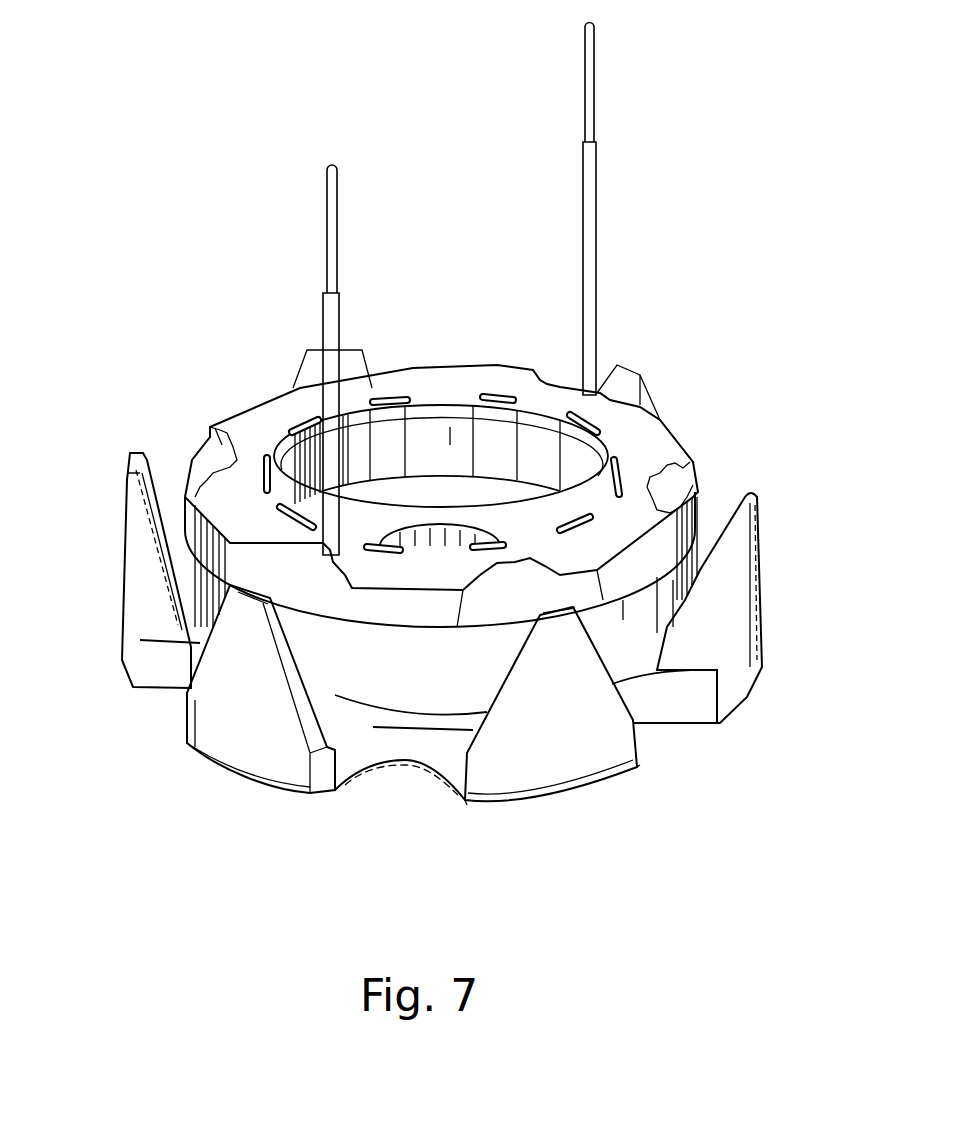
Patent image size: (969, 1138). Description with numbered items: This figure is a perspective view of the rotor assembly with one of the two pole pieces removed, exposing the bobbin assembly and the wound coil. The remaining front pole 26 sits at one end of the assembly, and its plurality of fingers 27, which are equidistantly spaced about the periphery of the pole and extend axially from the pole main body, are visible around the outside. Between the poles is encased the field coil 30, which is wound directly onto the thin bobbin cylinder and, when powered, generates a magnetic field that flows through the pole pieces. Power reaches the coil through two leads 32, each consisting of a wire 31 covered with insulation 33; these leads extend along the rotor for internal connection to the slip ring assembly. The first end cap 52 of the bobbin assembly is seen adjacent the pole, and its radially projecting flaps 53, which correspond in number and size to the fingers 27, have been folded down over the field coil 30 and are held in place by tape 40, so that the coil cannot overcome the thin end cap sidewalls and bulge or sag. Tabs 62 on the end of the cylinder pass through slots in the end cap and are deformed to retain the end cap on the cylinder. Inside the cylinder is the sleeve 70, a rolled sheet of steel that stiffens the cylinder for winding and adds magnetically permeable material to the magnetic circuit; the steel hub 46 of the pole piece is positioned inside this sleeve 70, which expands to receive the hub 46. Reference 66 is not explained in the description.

The front pole 26 is at (550, 798).
The fingers 27 is at (123, 530).
The field coil 30 is at (695, 478).
The wire 31 is at (330, 168).
The leads 32 is at (300, 218).
The insulation 33 is at (324, 322).
The tape 40 is at (633, 640).
The steel hub 46 is at (383, 497).
The first end cap 52 is at (210, 437).
The flaps 53 is at (413, 617).
The tabs 62 is at (300, 420).
The slots 66 is at (528, 425).
The sleeve 70 is at (430, 418).